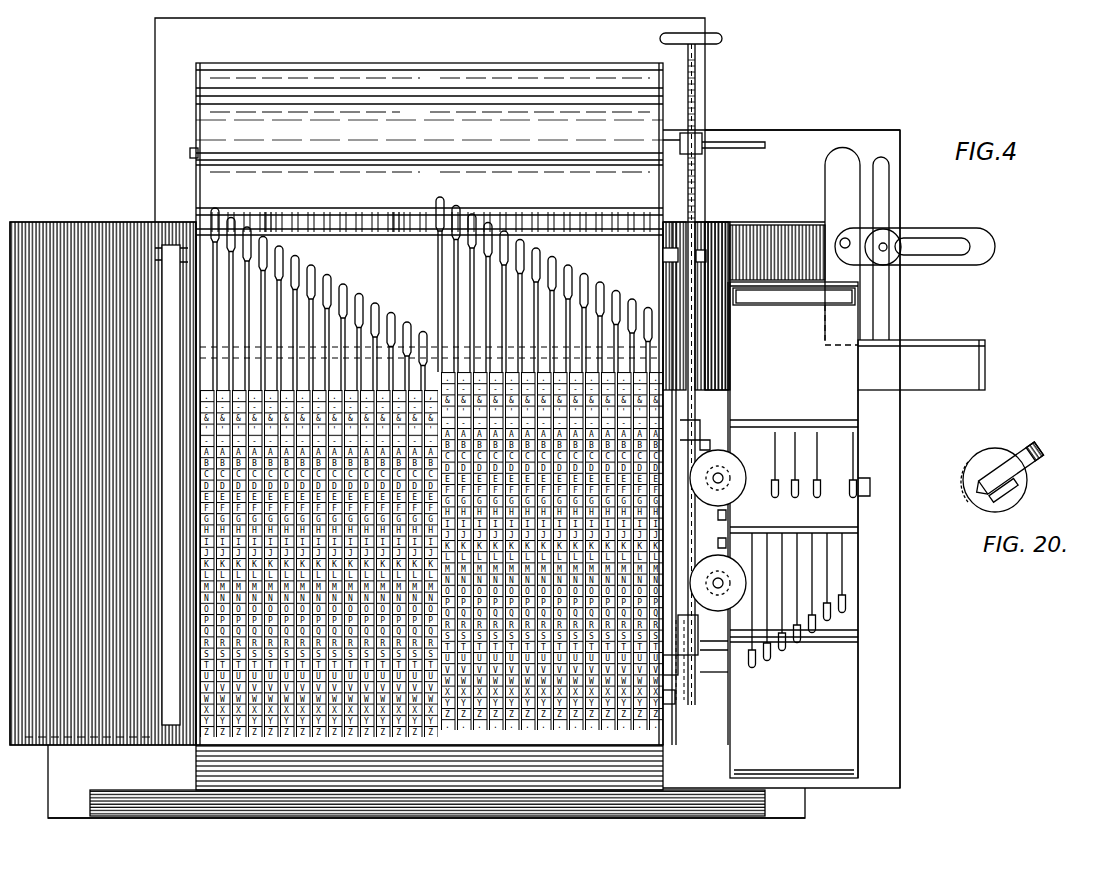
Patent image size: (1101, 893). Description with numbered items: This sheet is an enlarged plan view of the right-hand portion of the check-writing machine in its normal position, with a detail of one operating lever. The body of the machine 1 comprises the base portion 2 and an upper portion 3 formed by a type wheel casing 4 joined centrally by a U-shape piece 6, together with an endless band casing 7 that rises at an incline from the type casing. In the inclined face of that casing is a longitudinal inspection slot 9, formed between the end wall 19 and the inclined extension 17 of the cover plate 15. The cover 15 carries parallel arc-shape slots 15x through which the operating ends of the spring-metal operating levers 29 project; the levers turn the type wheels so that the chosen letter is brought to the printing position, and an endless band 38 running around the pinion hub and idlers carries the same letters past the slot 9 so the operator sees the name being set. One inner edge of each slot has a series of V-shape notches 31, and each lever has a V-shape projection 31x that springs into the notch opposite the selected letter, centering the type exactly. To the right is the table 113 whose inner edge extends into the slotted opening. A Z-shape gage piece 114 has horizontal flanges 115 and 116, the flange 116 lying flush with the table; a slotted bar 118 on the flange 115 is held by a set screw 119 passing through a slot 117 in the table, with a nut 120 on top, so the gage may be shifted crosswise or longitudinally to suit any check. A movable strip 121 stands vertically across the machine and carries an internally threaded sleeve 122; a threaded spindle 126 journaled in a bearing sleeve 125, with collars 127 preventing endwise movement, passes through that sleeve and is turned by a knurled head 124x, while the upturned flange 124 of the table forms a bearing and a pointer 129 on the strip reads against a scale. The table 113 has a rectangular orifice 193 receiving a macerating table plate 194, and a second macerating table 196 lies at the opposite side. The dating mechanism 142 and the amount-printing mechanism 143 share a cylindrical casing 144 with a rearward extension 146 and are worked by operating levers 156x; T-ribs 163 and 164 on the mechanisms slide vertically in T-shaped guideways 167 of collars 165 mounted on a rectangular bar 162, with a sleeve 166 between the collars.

In FIG. 4, the body of the machine 1 is at (196, 170).
In FIG. 4, the base portion 2 is at (155, 100).
In FIG. 4, the upper portion 3 is at (486, 800).
In FIG. 4, the type wheel casing 4 is at (429, 758).
In FIG. 4, the U-shape piece 6 is at (152, 795).
In FIG. 4, the endless band casing 7 is at (429, 210).
In FIG. 4, the longitudinal inspection slot 9 is at (398, 222).
In FIG. 4, the cover plate 15 is at (660, 644).
In FIG. 4, the arc-shape slots 15x is at (660, 677).
In FIG. 4, the inclined extension 17 is at (431, 293).
In FIG. 4, the end wall 19 is at (390, 168).
In FIG. 4, the operating lever 29 is at (442, 330).
In FIG. 4, the V-shape notches 31 is at (172, 520).
In FIG. 20, the V-shape notches 31 is at (975, 500).
In FIG. 20, the V-shape projection 31x is at (982, 470).
In FIG. 4, the endless band 38 is at (272, 222).
In FIG. 4, the table 113 is at (885, 432).
In FIG. 4, the gage piece 114 is at (958, 342).
In FIG. 4, the horizontal flange 115 is at (842, 244).
In FIG. 4, the horizontal flange 116 is at (921, 365).
In FIG. 4, the slot 117 is at (886, 190).
In FIG. 4, the slotted bar 118 is at (990, 247).
In FIG. 4, the set screw 119 is at (887, 250).
In FIG. 4, the nut 120 is at (893, 235).
In FIG. 4, the movable strip 121 is at (752, 148).
In FIG. 4, the internally threaded sleeve 122 is at (700, 140).
In FIG. 4, the upturned flange 124 is at (870, 130).
In FIG. 4, the head 124x is at (722, 38).
In FIG. 4, the bearing sleeve 125 is at (690, 668).
In FIG. 4, the threaded spindle 126 is at (697, 210).
In FIG. 4, the collar 127 is at (700, 657).
In FIG. 4, the pointer 129 is at (190, 152).
In FIG. 4, the dating mechanism 142 is at (794, 402).
In FIG. 4, the amount printing mechanism 143 is at (794, 530).
In FIG. 4, the casing 144 is at (855, 560).
In FIG. 4, the rearward extension 146 is at (910, 713).
In FIG. 4, the operating lever 156x is at (862, 487).
In FIG. 4, the rectangular bar 162 is at (693, 356).
In FIG. 4, the T-rib 163 is at (728, 515).
In FIG. 4, the T-rib 164 is at (730, 442).
In FIG. 4, the collar 165 is at (718, 451).
In FIG. 4, the sleeve 166 is at (713, 575).
In FIG. 4, the T-shaped guideway 167 is at (730, 410).
In FIG. 4, the rectangular orifice 193 is at (782, 240).
In FIG. 4, the macerating table plate 194 is at (760, 240).
In FIG. 4, the macerating table 196 is at (96, 232).